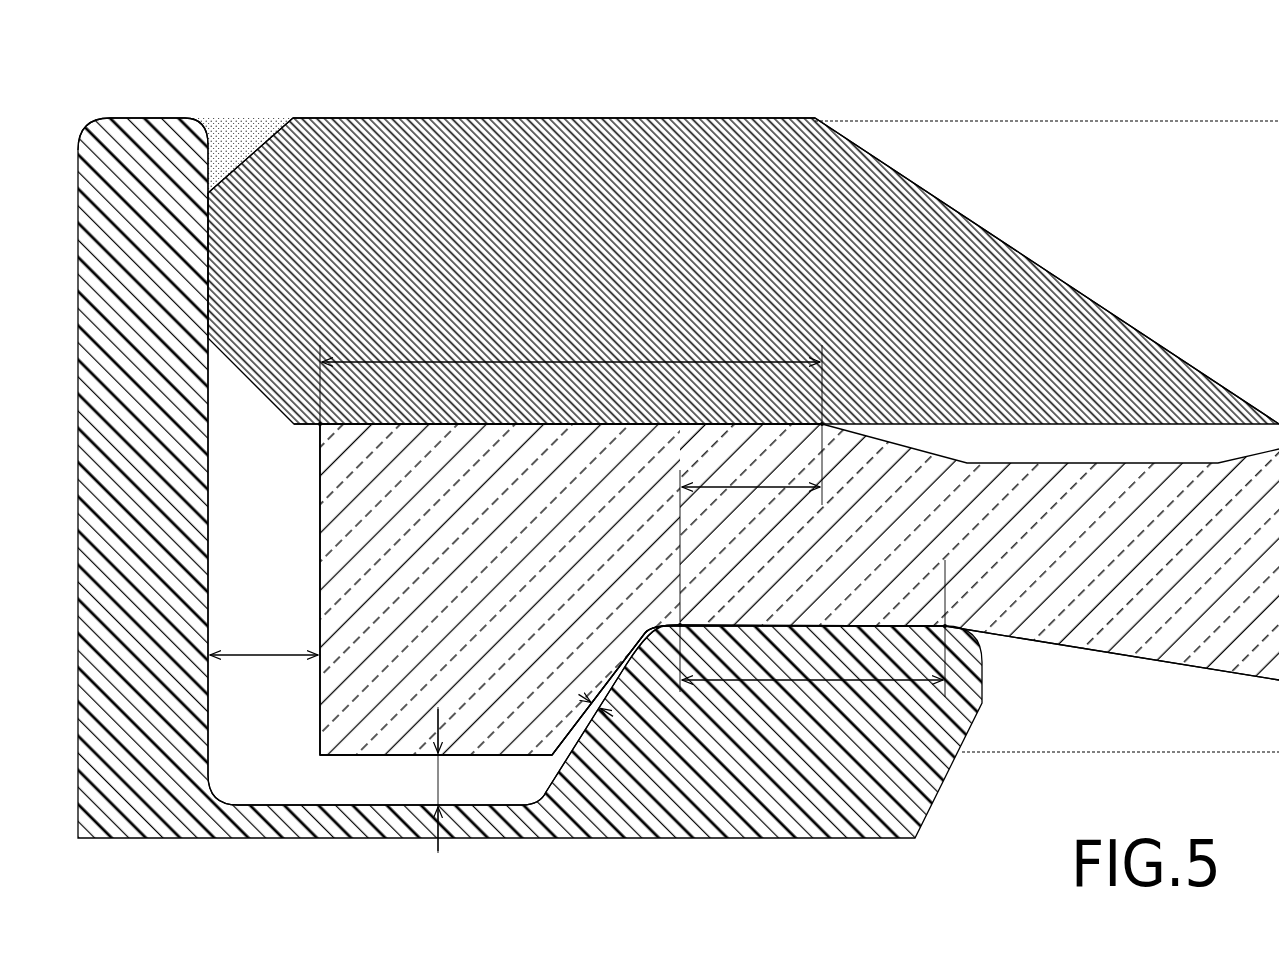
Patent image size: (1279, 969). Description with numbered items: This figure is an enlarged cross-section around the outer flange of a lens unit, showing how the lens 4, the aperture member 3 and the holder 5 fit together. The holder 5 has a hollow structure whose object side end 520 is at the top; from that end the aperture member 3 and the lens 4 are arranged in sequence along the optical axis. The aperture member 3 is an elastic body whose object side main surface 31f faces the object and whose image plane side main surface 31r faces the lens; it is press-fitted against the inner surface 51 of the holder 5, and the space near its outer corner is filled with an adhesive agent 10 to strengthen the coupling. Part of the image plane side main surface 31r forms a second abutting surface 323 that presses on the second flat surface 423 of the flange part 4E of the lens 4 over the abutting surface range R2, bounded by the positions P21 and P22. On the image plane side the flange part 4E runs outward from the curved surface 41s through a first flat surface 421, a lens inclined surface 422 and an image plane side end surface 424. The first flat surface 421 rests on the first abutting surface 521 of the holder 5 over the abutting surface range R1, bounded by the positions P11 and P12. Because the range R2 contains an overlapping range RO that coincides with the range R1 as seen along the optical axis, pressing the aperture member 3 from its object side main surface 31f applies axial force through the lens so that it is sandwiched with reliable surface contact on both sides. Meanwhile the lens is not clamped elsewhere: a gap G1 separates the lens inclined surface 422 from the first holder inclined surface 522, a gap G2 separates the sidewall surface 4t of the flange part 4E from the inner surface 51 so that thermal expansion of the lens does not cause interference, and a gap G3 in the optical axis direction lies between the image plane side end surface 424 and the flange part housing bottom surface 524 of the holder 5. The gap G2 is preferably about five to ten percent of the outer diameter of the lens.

The holder 5 is at (928, 790).
The object side end 520 is at (138, 116).
The inner surface 51 is at (212, 582).
The flange part housing bottom surface 524 is at (288, 802).
The first holder inclined surface 522 is at (635, 655).
The first abutting surface 521 is at (883, 623).
The aperture member 3 is at (425, 150).
The object side main surface 31f is at (535, 116).
The image plane side main surface 31r is at (1036, 428).
The second abutting surface 323 is at (418, 428).
The adhesive agent 10 is at (240, 133).
The lens 4 is at (1230, 657).
The flange part 4E is at (481, 586).
The sidewall surface 4t is at (318, 568).
The second flat surface 423 is at (560, 421).
The image plane side end surface 424 is at (489, 758).
The lens inclined surface 422 is at (576, 724).
The first flat surface 421 is at (768, 628).
The curved surface 41s is at (1113, 661).
The position P11 is at (677, 624).
The position P12 is at (948, 625).
The position P21 is at (318, 426).
The position P22 is at (825, 428).
The abutting surface range R1 is at (812, 628).
The abutting surface range R2 is at (571, 419).
The overlapping range RO is at (750, 540).
The gap G1 is at (613, 717).
The gap G2 is at (264, 640).
The gap G3 is at (419, 790).